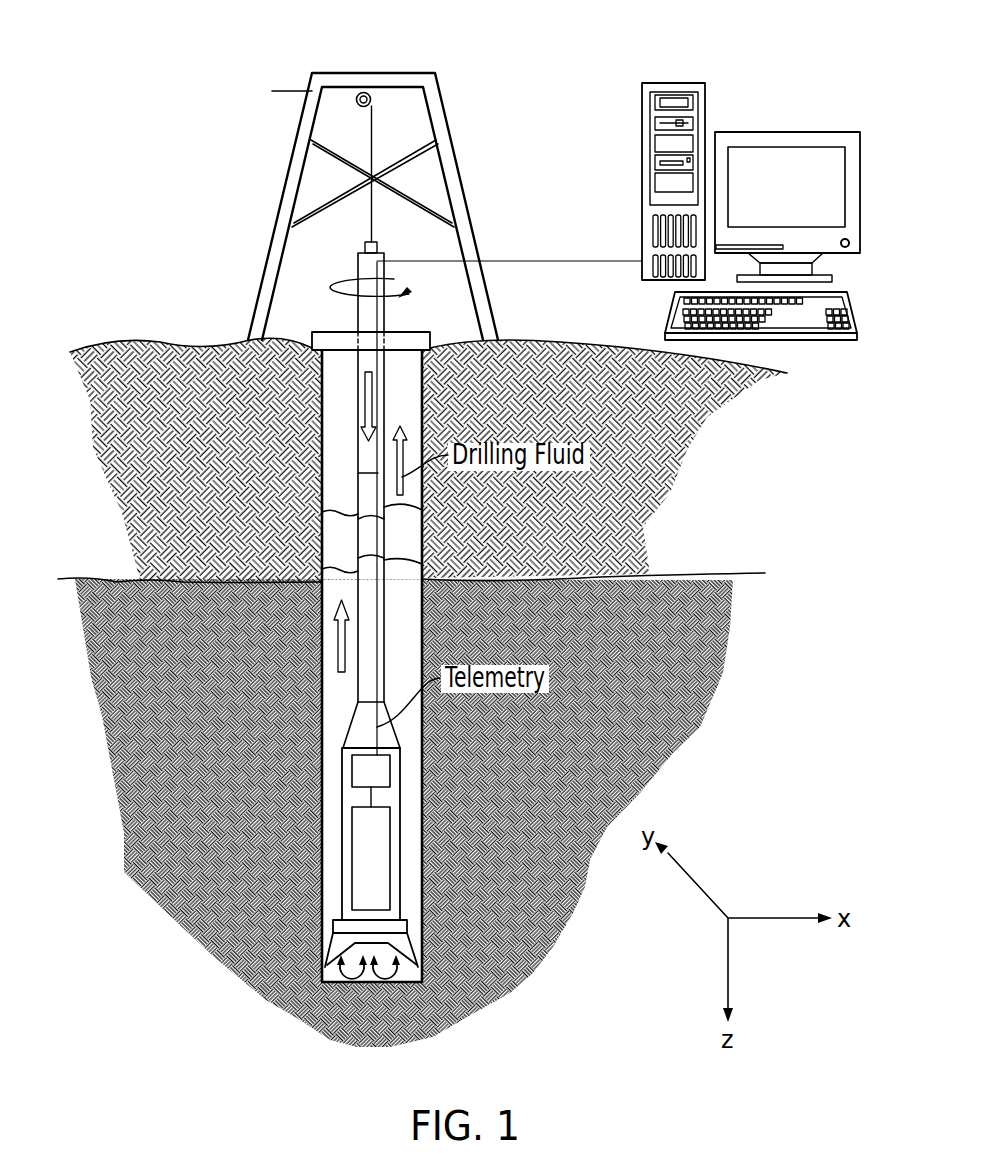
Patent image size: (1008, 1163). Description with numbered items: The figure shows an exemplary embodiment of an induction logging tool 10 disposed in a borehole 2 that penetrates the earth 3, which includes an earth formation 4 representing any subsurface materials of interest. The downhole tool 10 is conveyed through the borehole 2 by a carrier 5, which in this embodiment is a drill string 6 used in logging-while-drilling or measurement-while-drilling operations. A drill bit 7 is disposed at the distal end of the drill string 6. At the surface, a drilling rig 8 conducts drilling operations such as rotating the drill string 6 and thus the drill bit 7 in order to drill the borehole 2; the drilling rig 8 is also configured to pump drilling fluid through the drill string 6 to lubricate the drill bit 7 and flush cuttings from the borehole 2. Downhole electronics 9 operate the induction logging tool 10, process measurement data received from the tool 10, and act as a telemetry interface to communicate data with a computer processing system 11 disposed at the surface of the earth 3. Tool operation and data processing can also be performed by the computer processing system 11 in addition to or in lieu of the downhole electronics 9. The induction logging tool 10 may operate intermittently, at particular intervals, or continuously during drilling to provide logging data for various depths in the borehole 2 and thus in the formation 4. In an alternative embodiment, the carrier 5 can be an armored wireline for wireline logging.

The borehole 2 is at (330, 484).
The earth 3 is at (202, 425).
The earth formation 4 is at (243, 655).
The carrier 5 is at (357, 570).
The drill string 6 is at (357, 450).
The drill bit 7 is at (335, 937).
The drilling rig 8 is at (203, 230).
The downhole electronics 9 is at (379, 783).
The induction logging tool 10 is at (384, 842).
The computer processing system 11 is at (675, 82).